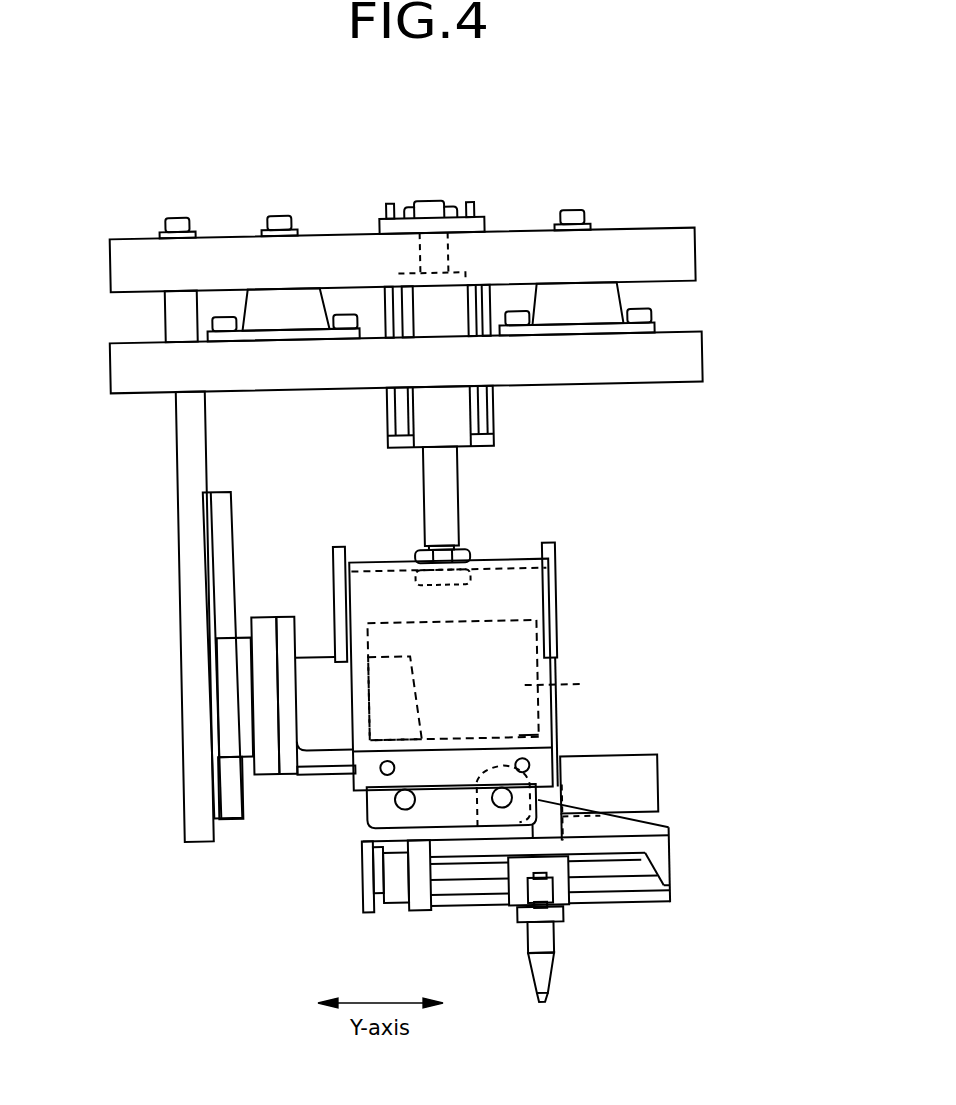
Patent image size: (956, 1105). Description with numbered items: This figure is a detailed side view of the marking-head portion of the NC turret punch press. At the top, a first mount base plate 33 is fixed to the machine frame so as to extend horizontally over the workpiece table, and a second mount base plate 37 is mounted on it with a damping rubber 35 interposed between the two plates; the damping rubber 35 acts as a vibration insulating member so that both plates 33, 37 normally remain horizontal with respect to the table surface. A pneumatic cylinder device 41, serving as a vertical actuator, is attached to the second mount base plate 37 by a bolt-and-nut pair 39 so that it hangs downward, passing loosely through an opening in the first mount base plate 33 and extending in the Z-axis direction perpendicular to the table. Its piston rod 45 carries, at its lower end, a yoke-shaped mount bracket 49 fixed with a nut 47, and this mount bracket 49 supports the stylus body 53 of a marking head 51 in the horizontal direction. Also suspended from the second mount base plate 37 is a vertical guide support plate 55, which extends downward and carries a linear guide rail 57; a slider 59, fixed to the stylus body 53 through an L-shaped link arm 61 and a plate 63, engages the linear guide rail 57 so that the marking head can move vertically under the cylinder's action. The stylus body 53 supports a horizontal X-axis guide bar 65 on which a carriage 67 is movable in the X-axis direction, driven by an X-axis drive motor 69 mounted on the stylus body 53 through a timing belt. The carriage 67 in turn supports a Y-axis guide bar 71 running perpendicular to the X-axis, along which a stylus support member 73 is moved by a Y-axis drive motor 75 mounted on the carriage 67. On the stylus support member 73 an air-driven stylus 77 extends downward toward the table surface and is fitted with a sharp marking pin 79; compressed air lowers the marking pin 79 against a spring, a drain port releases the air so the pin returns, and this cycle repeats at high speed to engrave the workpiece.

The first mount base plate 33 is at (685, 366).
The damping rubber 35 is at (319, 298).
The second mount base plate 37 is at (685, 265).
The bolt-and-nut pair 39 is at (449, 200).
The pneumatic cylinder device 41 is at (466, 433).
The piston rod 45 is at (450, 497).
The nut 47 is at (473, 557).
The mount bracket 49 is at (532, 601).
The marking head 51 is at (660, 735).
The stylus body 53 is at (371, 800).
The vertical guide support plate 55 is at (195, 442).
The linear guide rail 57 is at (220, 520).
The slider 59 is at (237, 648).
The L-shaped link arm 61 is at (294, 754).
The plate 63 is at (264, 746).
The X-axis guide bar 65 is at (498, 773).
The carriage 67 is at (655, 859).
The X-axis drive motor 69 is at (523, 691).
The Y-axis guide bar 71 is at (606, 893).
The stylus support member 73 is at (514, 894).
The Y-axis drive motor 75 is at (646, 781).
The stylus 77 is at (536, 940).
The marking pin 79 is at (533, 1002).